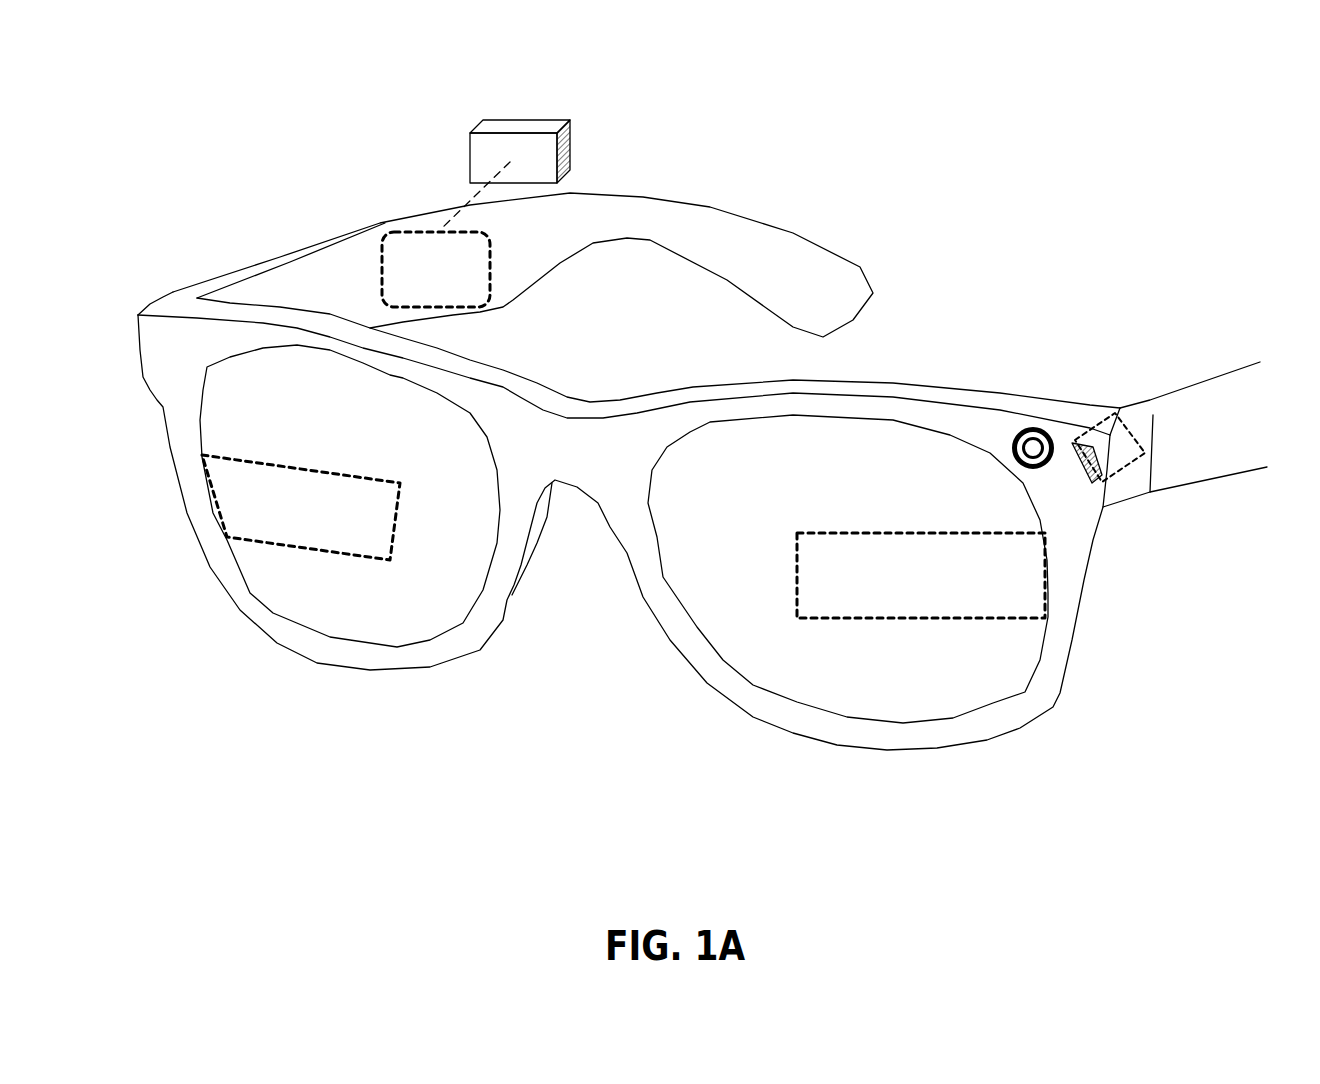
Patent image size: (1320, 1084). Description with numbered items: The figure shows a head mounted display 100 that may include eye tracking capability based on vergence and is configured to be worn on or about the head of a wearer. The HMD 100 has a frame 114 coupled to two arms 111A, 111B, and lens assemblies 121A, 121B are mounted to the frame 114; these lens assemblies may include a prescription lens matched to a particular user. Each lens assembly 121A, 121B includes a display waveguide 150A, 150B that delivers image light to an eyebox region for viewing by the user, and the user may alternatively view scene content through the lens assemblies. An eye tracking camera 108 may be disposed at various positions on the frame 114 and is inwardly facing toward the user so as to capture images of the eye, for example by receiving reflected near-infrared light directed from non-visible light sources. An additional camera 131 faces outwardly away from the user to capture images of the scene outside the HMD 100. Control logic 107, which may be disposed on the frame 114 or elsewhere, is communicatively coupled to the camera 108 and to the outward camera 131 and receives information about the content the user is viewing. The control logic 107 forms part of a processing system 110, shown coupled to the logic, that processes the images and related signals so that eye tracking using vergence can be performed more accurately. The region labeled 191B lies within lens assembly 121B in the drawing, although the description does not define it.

The head mounted display 100 is at (1225, 64).
The control logic 107 is at (452, 296).
The eye tracking camera 108 is at (1128, 420).
The processing system 110 is at (566, 147).
The arm 111A is at (588, 236).
The arm 111B is at (1228, 447).
The frame 114 is at (195, 362).
The lens assembly 121A is at (467, 542).
The lens assembly 121B is at (777, 454).
The additional camera 131 is at (1033, 428).
The display waveguide 150A is at (233, 458).
The display waveguide 150B is at (984, 620).
The right lens optical region 191B is at (722, 570).